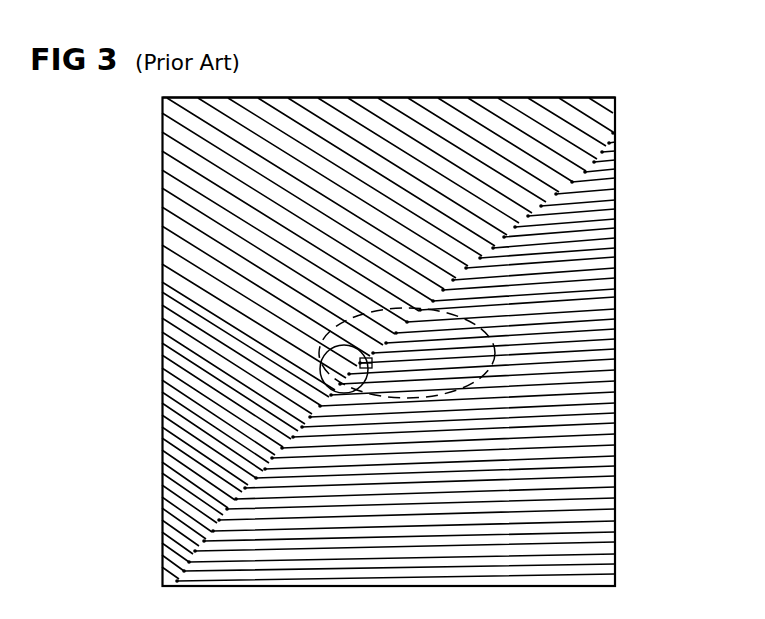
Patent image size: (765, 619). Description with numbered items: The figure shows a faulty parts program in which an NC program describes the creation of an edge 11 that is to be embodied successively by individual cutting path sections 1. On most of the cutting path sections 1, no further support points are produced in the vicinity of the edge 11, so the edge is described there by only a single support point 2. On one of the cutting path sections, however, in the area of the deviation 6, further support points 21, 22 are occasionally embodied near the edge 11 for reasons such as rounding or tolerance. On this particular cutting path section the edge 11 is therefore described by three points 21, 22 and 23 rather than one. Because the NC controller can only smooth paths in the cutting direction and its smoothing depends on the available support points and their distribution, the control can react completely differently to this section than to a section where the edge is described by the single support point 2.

The cutting path sections 1 is at (619, 212).
The single support point 2 is at (597, 160).
The edge 11 is at (619, 130).
The further support point 21 is at (338, 353).
The further support point 22 is at (488, 372).
The support point 23 is at (333, 391).
The deviation 6 is at (486, 368).